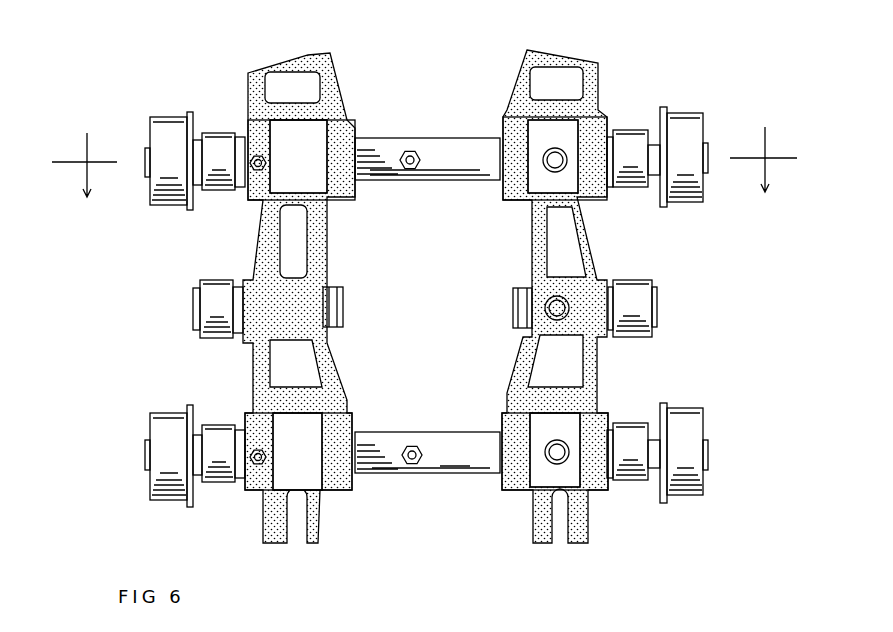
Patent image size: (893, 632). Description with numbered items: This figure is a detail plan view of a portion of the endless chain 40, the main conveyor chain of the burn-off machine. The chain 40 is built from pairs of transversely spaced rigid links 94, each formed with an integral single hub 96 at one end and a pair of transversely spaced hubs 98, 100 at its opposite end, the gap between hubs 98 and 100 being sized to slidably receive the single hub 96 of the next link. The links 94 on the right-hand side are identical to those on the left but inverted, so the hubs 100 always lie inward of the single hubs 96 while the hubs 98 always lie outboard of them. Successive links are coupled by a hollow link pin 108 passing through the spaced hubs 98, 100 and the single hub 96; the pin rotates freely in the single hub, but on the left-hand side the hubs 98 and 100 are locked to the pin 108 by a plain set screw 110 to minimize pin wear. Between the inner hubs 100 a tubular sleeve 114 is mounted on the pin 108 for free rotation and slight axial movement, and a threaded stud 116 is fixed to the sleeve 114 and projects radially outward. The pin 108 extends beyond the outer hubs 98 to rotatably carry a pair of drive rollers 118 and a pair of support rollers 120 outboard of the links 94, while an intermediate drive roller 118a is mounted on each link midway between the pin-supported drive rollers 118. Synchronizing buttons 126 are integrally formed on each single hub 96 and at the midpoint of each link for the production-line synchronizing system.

The endless chain 40 is at (642, 67).
The rigid link 94 is at (335, 58).
The single hub 96 is at (310, 168).
The outer hub 98 is at (257, 133).
The inner hub 100 is at (343, 95).
The link pin 108 is at (418, 130).
The set screw 110 is at (241, 200).
The tubular sleeve 114 is at (462, 165).
The threaded stud 116 is at (410, 170).
The drive roller 118 is at (217, 143).
The intermediate drive roller 118a is at (634, 286).
The support roller 120 is at (680, 127).
The synchronizing button 126 is at (545, 160).